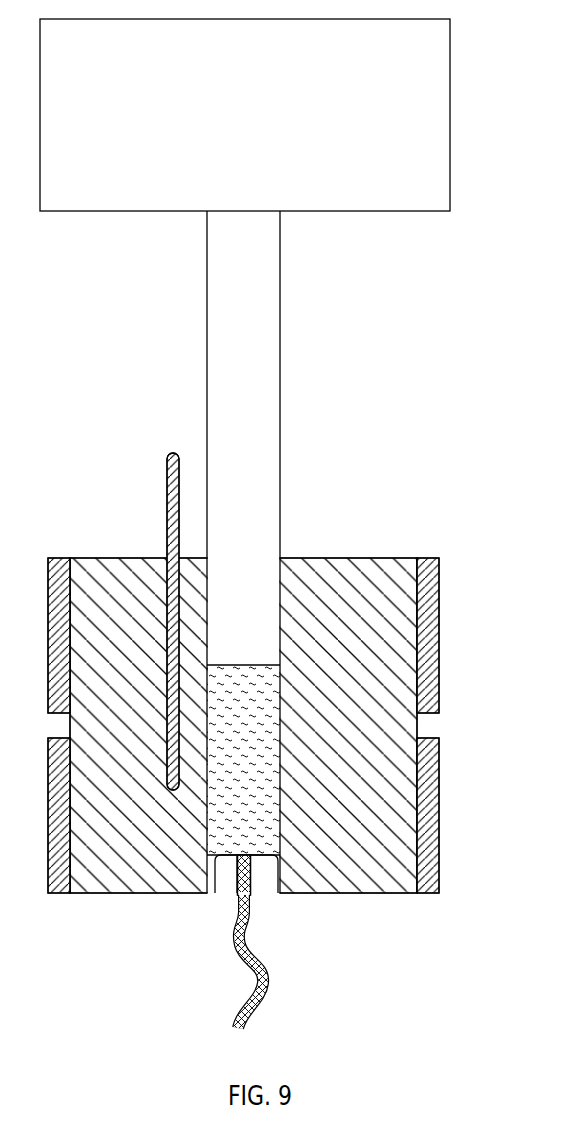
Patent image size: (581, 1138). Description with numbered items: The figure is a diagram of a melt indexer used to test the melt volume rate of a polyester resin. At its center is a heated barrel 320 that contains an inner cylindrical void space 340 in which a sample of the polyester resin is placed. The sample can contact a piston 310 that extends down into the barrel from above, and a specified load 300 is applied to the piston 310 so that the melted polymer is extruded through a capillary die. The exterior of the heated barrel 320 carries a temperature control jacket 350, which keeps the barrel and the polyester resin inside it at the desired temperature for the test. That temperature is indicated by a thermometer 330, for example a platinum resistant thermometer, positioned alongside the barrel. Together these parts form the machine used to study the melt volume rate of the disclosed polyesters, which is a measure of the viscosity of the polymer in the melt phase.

The specified load 300 is at (433, 104).
The piston 310 is at (262, 314).
The heated barrel 320 is at (420, 726).
The thermometer 330 is at (166, 500).
The inner cylindrical void space 340 is at (216, 860).
The temperature control jacket 350 is at (438, 815).